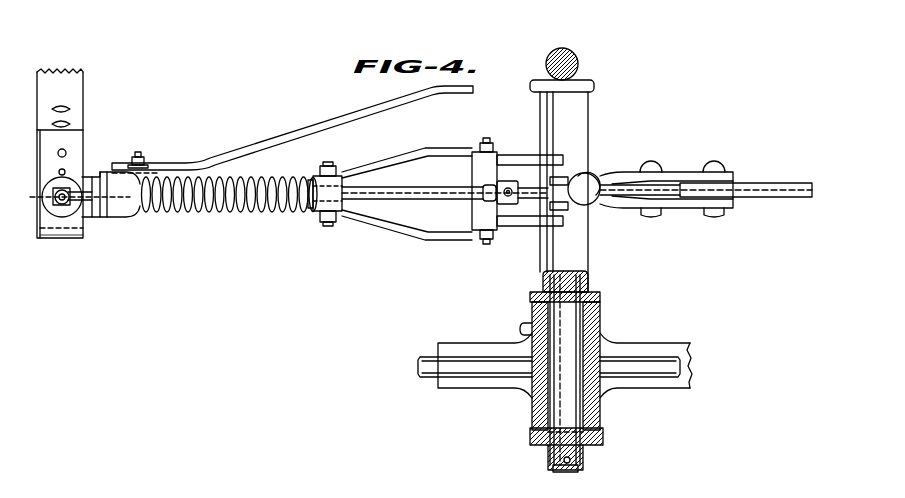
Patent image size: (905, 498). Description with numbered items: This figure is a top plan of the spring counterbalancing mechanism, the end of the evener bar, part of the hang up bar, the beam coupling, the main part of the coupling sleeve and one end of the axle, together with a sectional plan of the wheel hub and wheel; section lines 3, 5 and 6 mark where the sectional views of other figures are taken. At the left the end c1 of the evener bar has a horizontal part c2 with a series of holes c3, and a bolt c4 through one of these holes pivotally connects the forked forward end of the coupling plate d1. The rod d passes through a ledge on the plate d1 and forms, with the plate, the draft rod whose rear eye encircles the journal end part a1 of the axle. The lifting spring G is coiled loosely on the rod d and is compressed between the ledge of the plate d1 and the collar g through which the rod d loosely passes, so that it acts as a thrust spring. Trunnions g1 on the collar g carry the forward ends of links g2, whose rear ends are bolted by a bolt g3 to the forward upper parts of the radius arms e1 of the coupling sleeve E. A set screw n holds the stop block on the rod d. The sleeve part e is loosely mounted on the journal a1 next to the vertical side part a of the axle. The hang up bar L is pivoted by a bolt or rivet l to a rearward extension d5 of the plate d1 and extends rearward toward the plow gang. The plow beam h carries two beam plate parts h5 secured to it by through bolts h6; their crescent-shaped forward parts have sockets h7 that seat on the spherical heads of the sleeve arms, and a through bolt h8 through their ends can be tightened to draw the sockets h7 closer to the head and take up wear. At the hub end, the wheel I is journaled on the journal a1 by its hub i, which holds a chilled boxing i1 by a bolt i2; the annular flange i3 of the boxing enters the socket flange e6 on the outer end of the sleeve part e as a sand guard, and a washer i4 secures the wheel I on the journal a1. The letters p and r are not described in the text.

The end of the evener bar c1 is at (72, 97).
The horizontal part of the evener bar end c2 is at (48, 236).
The holes c3 is at (55, 158).
The bolt c4 is at (62, 212).
The coupling plate d1 is at (97, 210).
The rearward extension of the coupling plate d5 is at (152, 170).
The bolt or rivet l is at (137, 155).
The hang up bar L is at (291, 132).
The section line 6- 6 is at (24, 222).
The lifting spring G is at (270, 171).
The ring or collar g is at (323, 183).
The trunnions g1 is at (327, 164).
The links g2 is at (401, 152).
The bolt g3 is at (486, 141).
The rod d is at (428, 186).
The pin p is at (397, 180).
The rod end r is at (480, 186).
The section line 5- 5 is at (383, 197).
The arms or plates e1 is at (522, 160).
The set screw n is at (512, 188).
The sleeve part e is at (580, 250).
The coupling sleeve E is at (598, 151).
The vertical side part of the axle a is at (554, 48).
The semi-spherical depressions or sockets h7 is at (598, 178).
The through bolt h8 is at (572, 174).
The beam h is at (706, 186).
The beam coupling plate parts h5 is at (648, 170).
The through bolts h6 is at (706, 169).
The section line 3- 3 is at (533, 267).
The socket flange e6 is at (534, 295).
The annular flange i3 is at (598, 297).
The wheel hub i is at (600, 330).
The chilled boxing i1 is at (597, 315).
The washer i4 is at (588, 450).
The lower horizontal or journal end part of the axle a1 is at (570, 409).
The bolt i2 is at (520, 328).
The wheel I is at (450, 353).